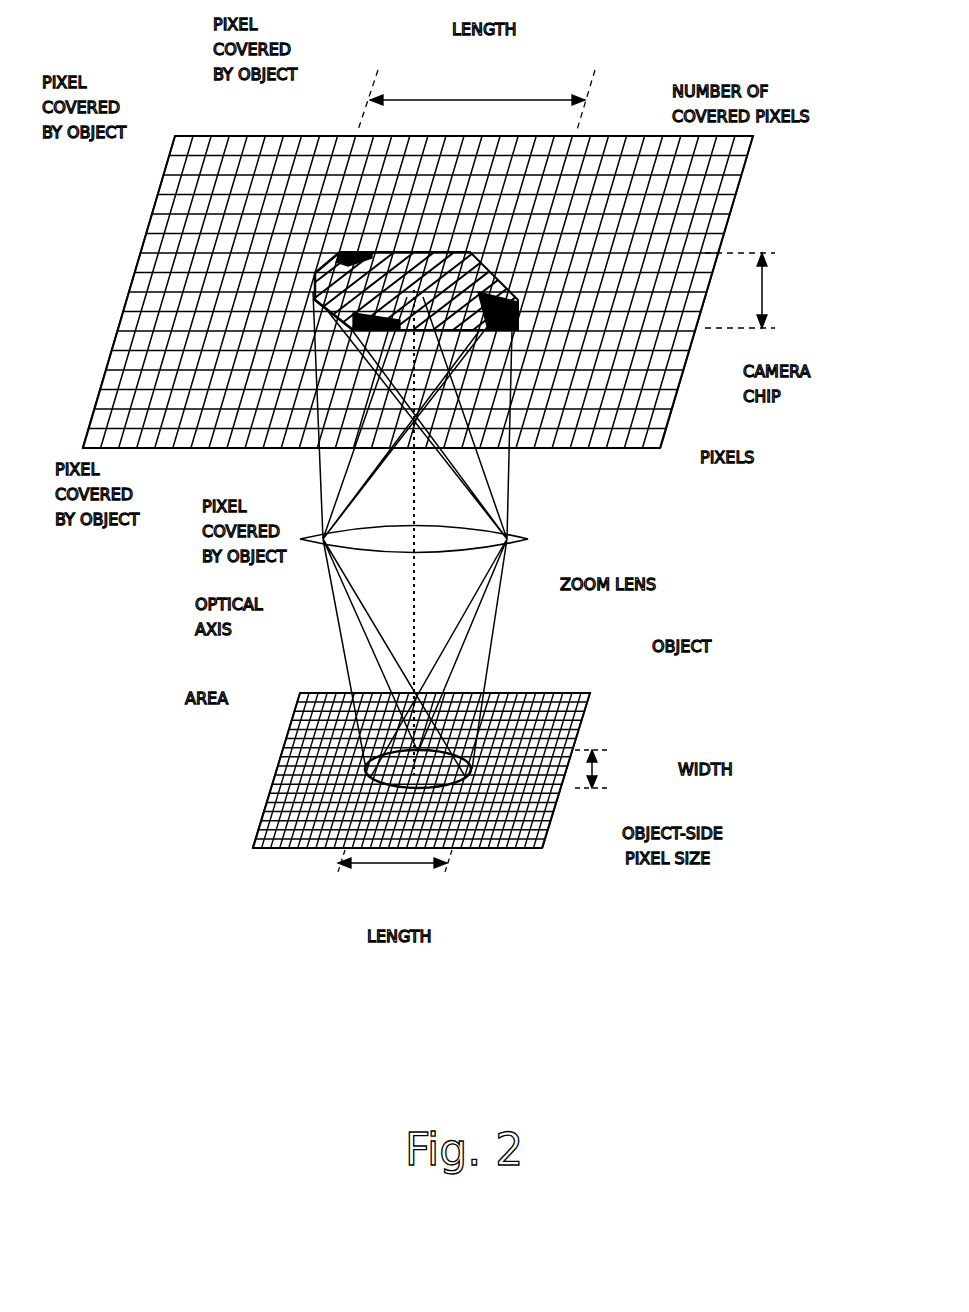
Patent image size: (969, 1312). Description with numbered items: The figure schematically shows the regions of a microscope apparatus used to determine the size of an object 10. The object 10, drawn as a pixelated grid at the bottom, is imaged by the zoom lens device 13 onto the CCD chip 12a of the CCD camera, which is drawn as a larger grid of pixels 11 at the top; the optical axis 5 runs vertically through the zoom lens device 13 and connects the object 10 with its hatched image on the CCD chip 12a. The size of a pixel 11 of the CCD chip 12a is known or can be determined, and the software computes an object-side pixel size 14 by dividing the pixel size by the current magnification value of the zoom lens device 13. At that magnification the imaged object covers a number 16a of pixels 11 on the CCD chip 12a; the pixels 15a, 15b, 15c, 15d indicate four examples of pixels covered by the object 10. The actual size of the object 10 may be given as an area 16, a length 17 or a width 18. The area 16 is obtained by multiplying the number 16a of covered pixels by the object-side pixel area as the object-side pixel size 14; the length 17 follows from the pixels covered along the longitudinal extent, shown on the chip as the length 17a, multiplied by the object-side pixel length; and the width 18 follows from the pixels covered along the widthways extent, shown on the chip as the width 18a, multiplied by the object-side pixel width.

The optical axis 5 is at (414, 582).
The object 10 is at (473, 758).
The pixel 11 is at (655, 447).
The CCD chip 12a is at (688, 338).
The zoom lens device 13 is at (515, 541).
The object-side pixel size 14 is at (540, 838).
The pixel covered by object 15a is at (345, 255).
The pixel covered by object 15b is at (338, 259).
The pixel covered by object 15c is at (325, 300).
The pixel covered by object 15d is at (365, 330).
The area 16 is at (373, 758).
The number of covered pixels 16a is at (467, 263).
The length 17 is at (388, 866).
The length 17a is at (465, 100).
The width 18 is at (596, 769).
The width 18a is at (768, 290).